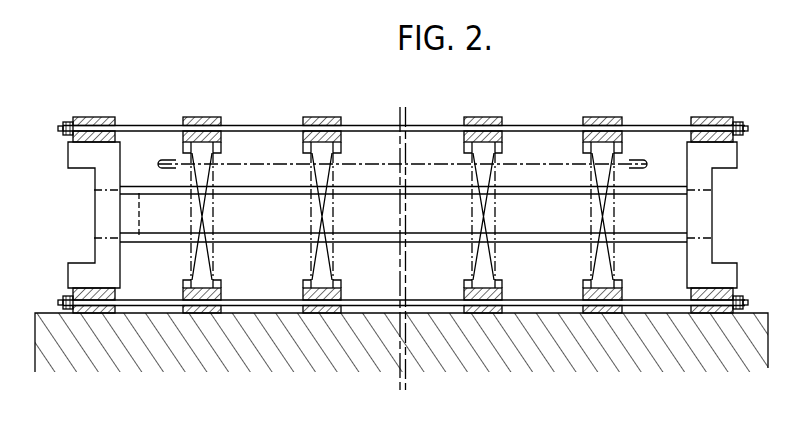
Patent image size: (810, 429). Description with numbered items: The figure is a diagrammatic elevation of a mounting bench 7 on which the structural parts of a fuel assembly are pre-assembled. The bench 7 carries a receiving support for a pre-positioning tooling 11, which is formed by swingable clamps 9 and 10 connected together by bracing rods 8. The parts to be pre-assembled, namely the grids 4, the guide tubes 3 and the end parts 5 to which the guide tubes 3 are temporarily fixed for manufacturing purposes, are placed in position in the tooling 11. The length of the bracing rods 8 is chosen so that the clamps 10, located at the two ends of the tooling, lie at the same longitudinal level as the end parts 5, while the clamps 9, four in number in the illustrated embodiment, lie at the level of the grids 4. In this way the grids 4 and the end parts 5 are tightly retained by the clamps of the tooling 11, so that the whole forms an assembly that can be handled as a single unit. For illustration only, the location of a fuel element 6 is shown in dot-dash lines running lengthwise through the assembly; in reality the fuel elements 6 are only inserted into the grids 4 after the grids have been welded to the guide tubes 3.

The guide tubes 3 is at (163, 235).
The grids 4 is at (313, 255).
The end part 5 is at (83, 158).
The fuel element 6 is at (563, 163).
The mounting bench 7 is at (718, 346).
The bracing rods 8 is at (433, 125).
The swingable clamps 9 is at (320, 120).
The swingable clamps 10 is at (84, 117).
The pre-positioning tooling 11 is at (278, 110).